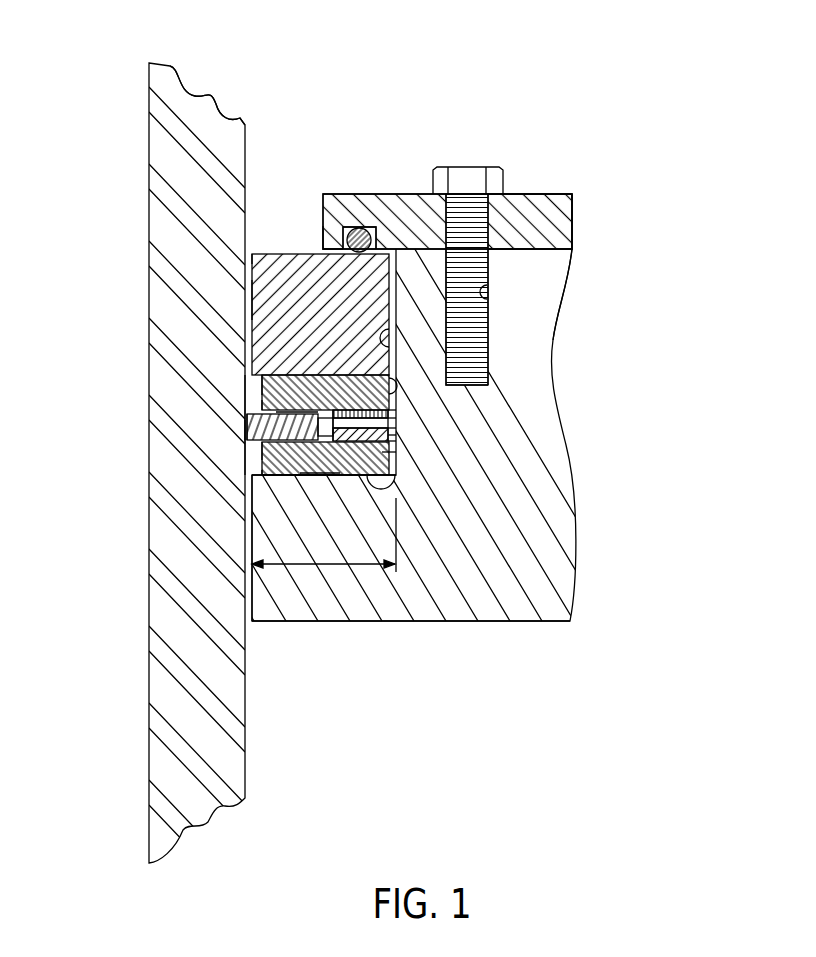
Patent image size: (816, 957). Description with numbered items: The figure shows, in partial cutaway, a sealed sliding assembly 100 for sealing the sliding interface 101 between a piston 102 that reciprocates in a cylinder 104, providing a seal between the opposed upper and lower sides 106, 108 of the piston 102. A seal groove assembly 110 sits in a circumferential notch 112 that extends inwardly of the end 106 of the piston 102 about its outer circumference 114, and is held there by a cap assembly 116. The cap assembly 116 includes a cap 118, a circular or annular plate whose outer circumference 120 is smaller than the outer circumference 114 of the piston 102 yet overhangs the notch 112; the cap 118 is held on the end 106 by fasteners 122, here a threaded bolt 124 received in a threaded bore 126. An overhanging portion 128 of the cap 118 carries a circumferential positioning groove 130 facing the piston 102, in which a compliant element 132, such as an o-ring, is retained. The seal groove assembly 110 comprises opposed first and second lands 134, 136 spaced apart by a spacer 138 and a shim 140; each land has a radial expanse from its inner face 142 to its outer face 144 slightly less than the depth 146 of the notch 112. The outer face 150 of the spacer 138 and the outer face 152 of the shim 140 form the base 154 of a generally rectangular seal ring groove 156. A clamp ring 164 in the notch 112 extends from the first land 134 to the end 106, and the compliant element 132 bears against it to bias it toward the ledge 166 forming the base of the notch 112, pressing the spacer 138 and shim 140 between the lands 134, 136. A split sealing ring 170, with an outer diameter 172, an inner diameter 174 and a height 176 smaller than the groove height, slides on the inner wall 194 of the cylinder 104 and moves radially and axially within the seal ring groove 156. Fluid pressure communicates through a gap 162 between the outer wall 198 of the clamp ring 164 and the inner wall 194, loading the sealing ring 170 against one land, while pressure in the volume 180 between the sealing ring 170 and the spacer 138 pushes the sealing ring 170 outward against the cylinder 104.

The sealed sliding assembly 100 is at (228, 388).
The sliding interface 101 is at (246, 431).
The piston 102 is at (555, 612).
The cylinder 104 is at (162, 760).
The upper side (end) of piston 106 is at (571, 246).
The lower side (end) of piston 108 is at (490, 622).
The seal groove assembly 110 is at (392, 428).
The circumferential notch 112 is at (533, 352).
The outer circumference of piston 114 is at (240, 605).
The cap assembly 116 is at (525, 162).
The cap 118 is at (375, 205).
The outer circumference of cap 120 is at (323, 226).
The fastener 122 is at (472, 178).
The threaded bolt 124 is at (490, 270).
The threaded bore 126 is at (494, 306).
The overhanging portion of cap 128 is at (275, 235).
The circumferential positioning groove 130 is at (350, 227).
The compliant element 132 is at (375, 233).
The first land 134 is at (250, 418).
The second land 136 is at (252, 548).
The spacer 138 is at (392, 445).
The shim 140 is at (390, 408).
The inner face of land 142 is at (265, 385).
The outer face of land 144 is at (262, 408).
The depth of notch 146 is at (338, 545).
The outer face of spacer 150 is at (382, 452).
The outer face of shim 152 is at (262, 398).
The base of seal ring groove 154 is at (324, 535).
The seal ring groove 156 is at (276, 412).
The gap 162 is at (247, 252).
The clamp ring 164 is at (258, 310).
The ledge 166 is at (292, 474).
The sealing ring 170 is at (262, 428).
The outer diameter of sealing ring 172 is at (262, 450).
The inner diameter of sealing ring 174 is at (392, 418).
The height of sealing ring 176 is at (319, 474).
The volume 180 is at (394, 435).
The inner wall of cylinder 194 is at (245, 143).
The outer wall of clamp ring 198 is at (252, 290).